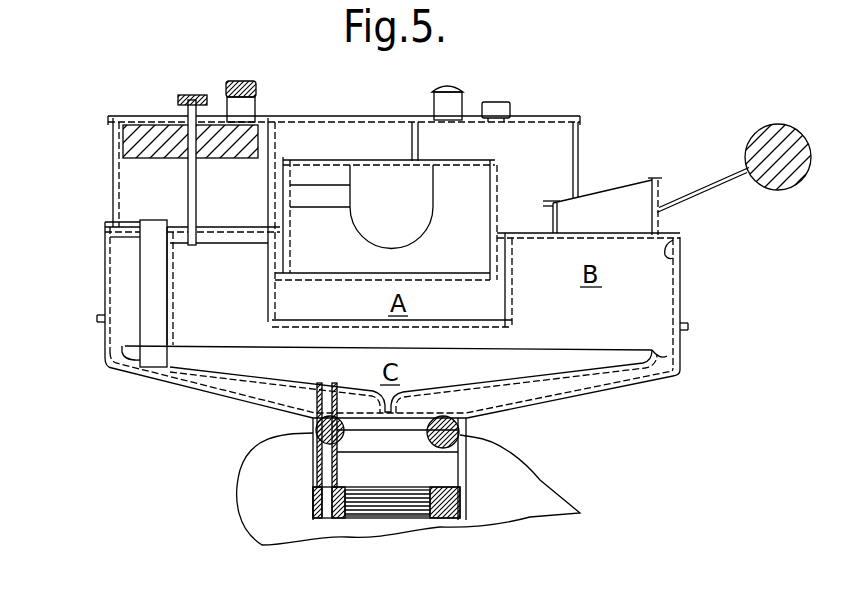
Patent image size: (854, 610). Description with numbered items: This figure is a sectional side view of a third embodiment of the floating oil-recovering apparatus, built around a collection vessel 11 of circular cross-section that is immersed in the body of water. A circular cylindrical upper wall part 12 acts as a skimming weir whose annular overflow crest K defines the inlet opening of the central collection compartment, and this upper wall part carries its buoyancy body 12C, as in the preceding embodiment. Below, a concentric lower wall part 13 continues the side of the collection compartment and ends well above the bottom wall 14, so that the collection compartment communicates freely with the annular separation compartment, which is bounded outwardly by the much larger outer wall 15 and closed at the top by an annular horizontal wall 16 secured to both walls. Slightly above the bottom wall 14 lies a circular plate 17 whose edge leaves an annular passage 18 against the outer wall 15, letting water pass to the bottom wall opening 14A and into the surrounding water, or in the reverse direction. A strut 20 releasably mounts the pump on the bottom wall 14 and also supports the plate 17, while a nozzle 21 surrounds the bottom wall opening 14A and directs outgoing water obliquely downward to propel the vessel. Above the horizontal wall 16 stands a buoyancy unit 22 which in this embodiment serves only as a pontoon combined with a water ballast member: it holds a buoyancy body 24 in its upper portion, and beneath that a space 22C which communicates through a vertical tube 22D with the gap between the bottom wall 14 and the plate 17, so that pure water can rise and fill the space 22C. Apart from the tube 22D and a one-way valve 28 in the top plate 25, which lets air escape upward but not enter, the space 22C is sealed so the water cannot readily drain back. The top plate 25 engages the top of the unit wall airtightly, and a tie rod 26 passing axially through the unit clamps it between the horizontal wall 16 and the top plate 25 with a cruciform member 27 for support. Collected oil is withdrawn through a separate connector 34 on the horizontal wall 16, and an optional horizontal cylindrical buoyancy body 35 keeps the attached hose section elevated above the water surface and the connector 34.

The collection vessel 11 is at (95, 362).
The upper wall part 12 is at (498, 177).
The buoyancy body 12C is at (387, 182).
The lower wall part 13 is at (267, 297).
The bottom wall 14 is at (218, 397).
The bottom wall opening 14A is at (410, 435).
The outer wall 15 is at (701, 303).
The horizontal wall 16 is at (680, 258).
The circular plate 17 is at (252, 377).
The annular passage 18 is at (667, 357).
The strut 20 is at (317, 462).
The nozzle 21 is at (547, 481).
The buoyancy unit 22 is at (100, 183).
The space 22C is at (135, 190).
The vertical tube 22D is at (140, 267).
The buoyancy body 24 is at (140, 135).
The top plate 25 is at (305, 116).
The tie rod 26 is at (182, 116).
The cruciform member 27 is at (236, 238).
The one-way valve 28 is at (243, 82).
The connector 34 is at (658, 218).
The buoyancy body 35 is at (780, 173).
The overflow crest K is at (292, 158).